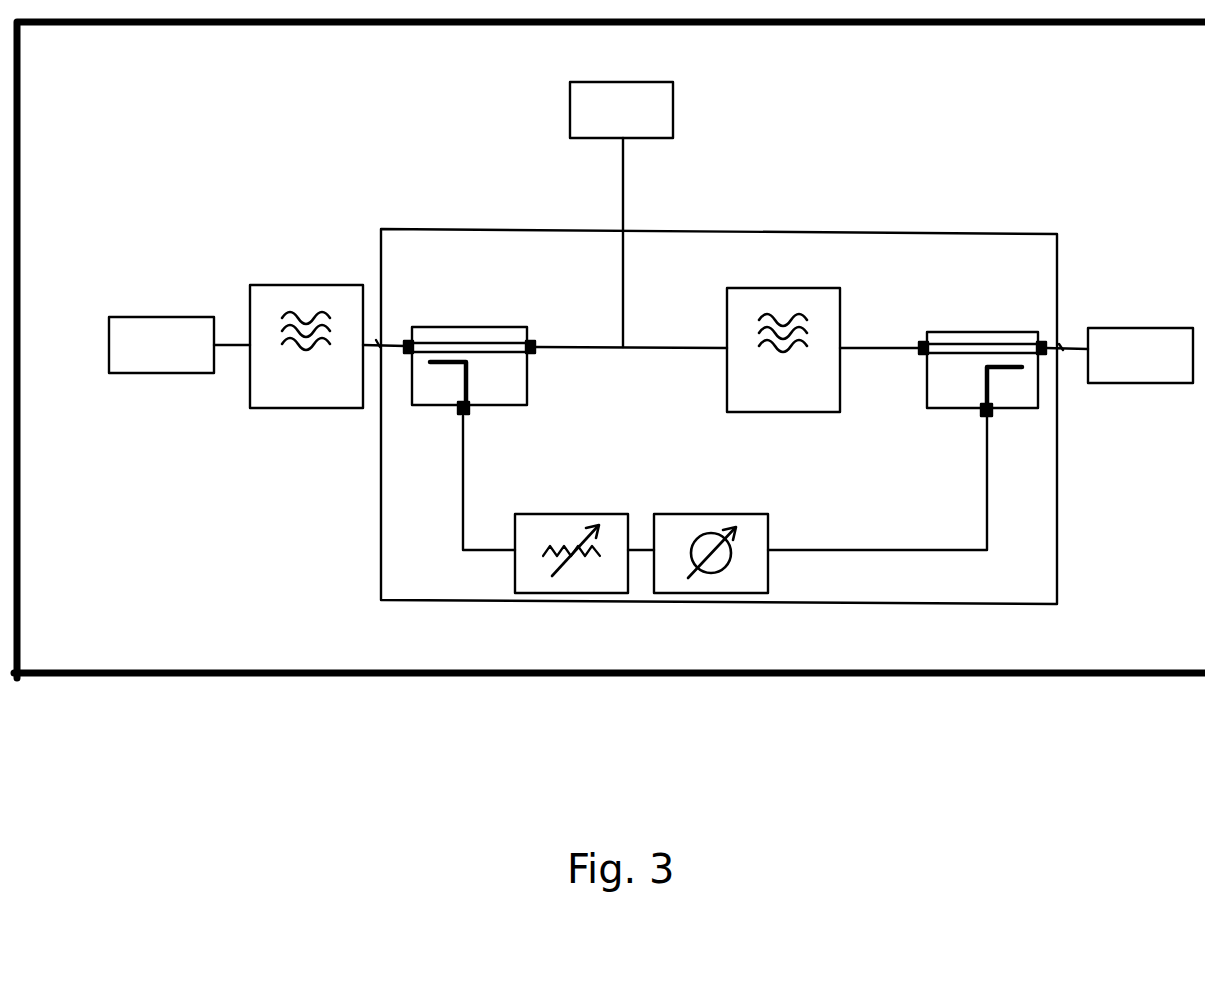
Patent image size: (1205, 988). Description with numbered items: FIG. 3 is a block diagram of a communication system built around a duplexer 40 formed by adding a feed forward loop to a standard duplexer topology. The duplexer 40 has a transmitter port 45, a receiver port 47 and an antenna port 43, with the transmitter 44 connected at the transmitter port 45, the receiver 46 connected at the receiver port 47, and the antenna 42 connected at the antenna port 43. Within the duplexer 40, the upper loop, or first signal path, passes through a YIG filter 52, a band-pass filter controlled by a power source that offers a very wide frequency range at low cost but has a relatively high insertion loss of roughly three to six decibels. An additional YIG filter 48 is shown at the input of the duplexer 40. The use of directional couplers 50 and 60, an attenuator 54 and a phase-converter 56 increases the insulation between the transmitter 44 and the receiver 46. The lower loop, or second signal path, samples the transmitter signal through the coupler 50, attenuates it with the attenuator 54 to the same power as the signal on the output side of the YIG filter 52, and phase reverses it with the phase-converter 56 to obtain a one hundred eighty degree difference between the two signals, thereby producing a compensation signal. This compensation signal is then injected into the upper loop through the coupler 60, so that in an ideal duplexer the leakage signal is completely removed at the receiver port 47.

The duplexer 40 is at (962, 198).
The antenna 42 is at (570, 120).
The antenna port 43 is at (626, 229).
The transmitter 44 is at (172, 373).
The transmitter port 45 is at (378, 345).
The receiver 46 is at (1132, 383).
The receiver port 47 is at (1062, 347).
The first YIG filter 48 is at (350, 408).
The directional coupler 50 is at (528, 396).
The YIG filter 52 is at (727, 406).
The attenuator 54 is at (576, 485).
The phase-converter 56 is at (722, 485).
The directional coupler 60 is at (952, 296).